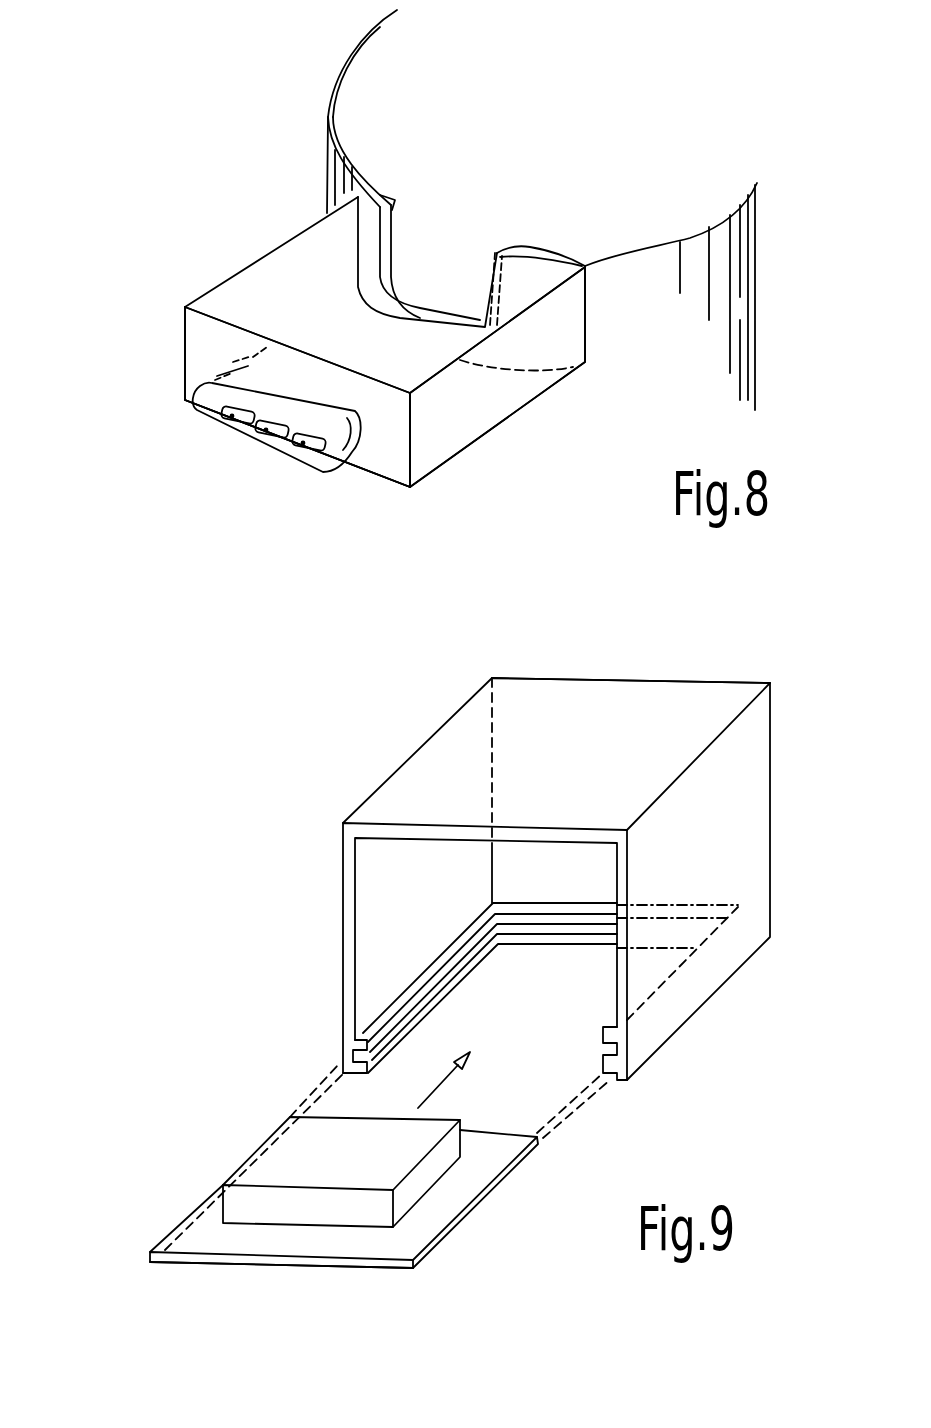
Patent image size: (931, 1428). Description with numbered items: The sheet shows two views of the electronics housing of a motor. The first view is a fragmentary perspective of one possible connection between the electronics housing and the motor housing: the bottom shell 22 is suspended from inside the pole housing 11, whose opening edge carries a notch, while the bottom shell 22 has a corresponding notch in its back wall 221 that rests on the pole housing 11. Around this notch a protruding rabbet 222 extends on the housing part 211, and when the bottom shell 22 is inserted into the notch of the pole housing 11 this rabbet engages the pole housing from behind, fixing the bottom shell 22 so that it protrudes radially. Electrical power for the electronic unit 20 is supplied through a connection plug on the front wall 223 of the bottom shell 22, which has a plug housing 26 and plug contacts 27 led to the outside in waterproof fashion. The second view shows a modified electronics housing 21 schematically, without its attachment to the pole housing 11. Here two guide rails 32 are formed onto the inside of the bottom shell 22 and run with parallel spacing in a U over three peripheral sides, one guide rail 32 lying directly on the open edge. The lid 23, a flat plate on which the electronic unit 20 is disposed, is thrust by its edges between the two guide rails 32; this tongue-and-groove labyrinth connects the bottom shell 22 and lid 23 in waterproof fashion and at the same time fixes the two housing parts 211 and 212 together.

In FIG. 8, the pole housing 11 is at (372, 27).
In FIG. 8, the protruding rabbet 222 is at (392, 203).
In FIG. 8, the front wall 223 is at (213, 333).
In FIG. 8, the plug housing 26 is at (250, 390).
In FIG. 8, the plug contacts 27 is at (295, 450).
In FIG. 8, the bottom shell 22 is at (430, 423).
In FIG. 9, the bottom shell 22 is at (594, 735).
In FIG. 8, the back wall 221 is at (520, 277).
In FIG. 8, the housing part 211 is at (373, 490).
In FIG. 9, the housing part 211 is at (729, 673).
In FIG. 9, the electronics housing 21 is at (372, 935).
In FIG. 9, the guide rails 32 is at (407, 992).
In FIG. 9, the electronic unit 20 is at (287, 1207).
In FIG. 9, the lid 23 is at (440, 1197).
In FIG. 9, the housing part 212 is at (353, 1281).